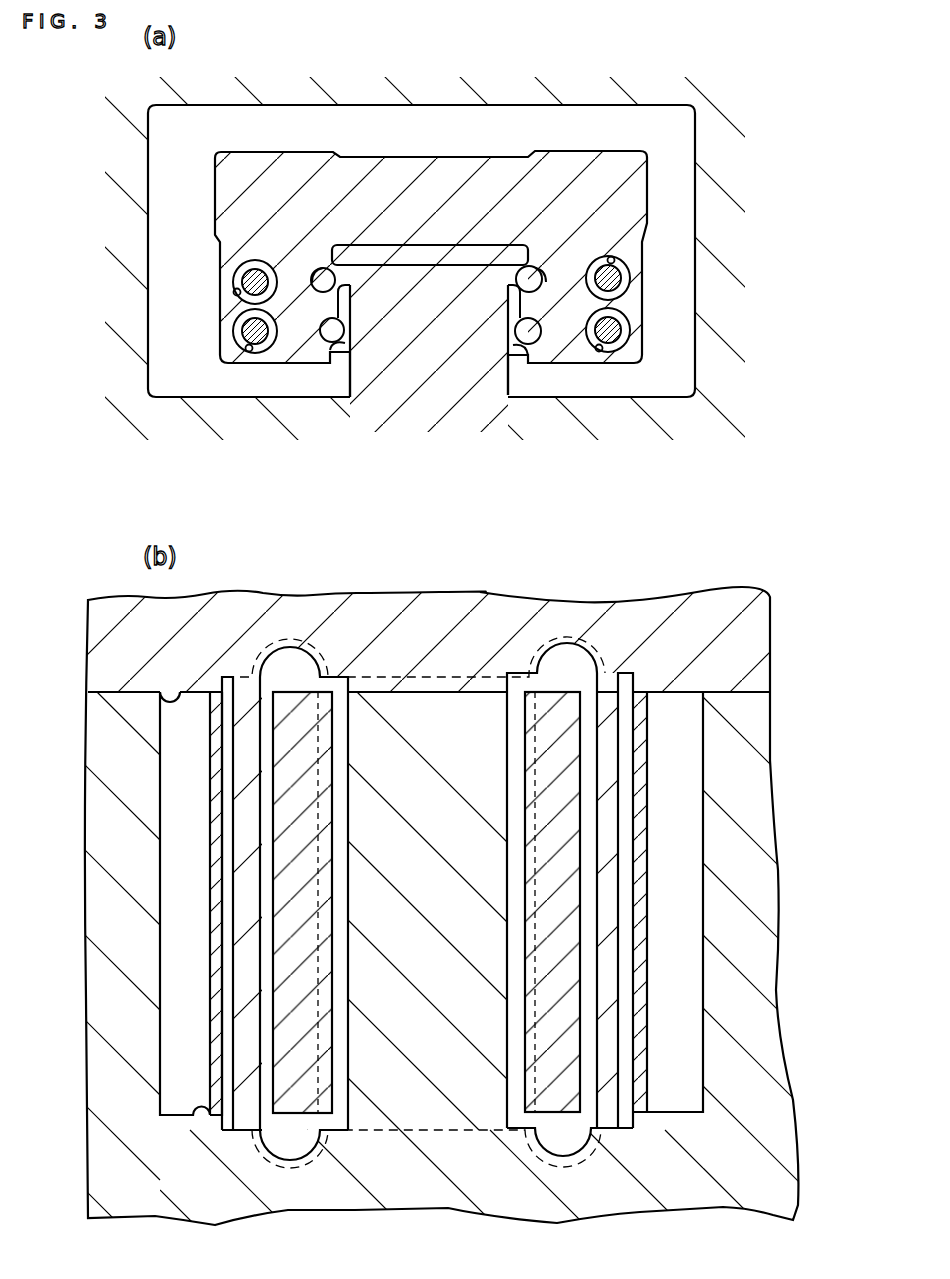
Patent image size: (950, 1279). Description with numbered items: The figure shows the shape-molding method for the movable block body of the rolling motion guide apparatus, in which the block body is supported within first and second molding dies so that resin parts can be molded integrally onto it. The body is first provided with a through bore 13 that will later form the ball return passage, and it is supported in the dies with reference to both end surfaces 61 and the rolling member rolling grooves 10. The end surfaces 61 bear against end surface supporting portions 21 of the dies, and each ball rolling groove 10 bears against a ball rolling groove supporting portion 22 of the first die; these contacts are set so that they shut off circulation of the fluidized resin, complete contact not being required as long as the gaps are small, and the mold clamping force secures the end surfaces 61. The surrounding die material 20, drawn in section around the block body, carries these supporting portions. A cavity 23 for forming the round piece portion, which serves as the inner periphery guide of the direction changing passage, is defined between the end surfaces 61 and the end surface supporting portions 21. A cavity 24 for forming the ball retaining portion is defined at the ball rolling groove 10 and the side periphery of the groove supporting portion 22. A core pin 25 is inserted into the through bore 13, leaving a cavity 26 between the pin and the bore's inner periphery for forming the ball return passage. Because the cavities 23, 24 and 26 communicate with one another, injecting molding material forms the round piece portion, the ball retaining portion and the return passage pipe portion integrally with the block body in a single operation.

The rolling member rolling groove 10 is at (320, 270).
The through bore 13 is at (234, 294).
The slider casing 20 is at (720, 155).
The end surface supporting portion 21 is at (165, 705).
The ball rolling groove supporting portion 22 is at (325, 292).
The cavity 23 is at (293, 660).
The cavity 24 is at (250, 347).
The core pin 25 is at (248, 272).
The cavity 26 is at (236, 278).
The end surface 61 is at (447, 185).